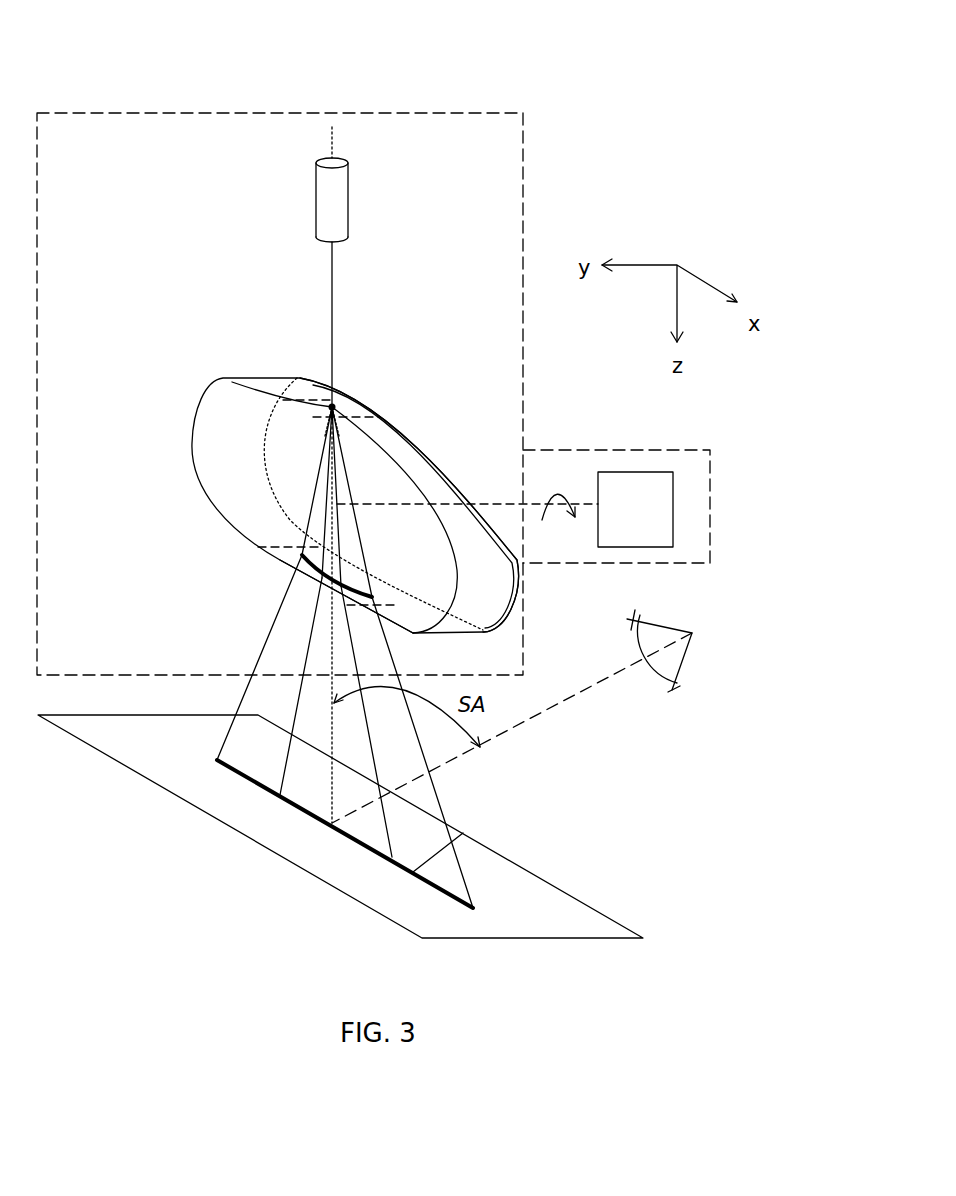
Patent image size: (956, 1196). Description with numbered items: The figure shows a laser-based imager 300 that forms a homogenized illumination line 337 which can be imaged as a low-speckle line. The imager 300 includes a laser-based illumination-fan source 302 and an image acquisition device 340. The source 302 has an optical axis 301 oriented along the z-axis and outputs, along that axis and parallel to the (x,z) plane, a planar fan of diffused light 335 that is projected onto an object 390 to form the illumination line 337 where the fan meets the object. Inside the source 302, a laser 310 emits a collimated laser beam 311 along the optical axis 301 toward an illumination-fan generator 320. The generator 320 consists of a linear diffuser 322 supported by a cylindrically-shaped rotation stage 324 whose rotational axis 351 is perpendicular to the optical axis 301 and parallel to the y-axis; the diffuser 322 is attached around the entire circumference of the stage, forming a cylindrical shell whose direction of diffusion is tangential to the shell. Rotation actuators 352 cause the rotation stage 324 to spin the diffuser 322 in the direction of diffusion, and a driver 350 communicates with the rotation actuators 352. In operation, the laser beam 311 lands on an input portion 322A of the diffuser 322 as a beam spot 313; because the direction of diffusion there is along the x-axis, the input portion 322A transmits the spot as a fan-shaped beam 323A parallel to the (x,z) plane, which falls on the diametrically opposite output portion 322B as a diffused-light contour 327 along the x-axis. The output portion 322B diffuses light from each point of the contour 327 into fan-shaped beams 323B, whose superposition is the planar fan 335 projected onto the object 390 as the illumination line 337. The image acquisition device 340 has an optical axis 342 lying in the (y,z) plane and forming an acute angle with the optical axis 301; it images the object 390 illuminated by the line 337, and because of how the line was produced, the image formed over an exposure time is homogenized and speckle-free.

The laser-based imager 300 is at (185, 88).
The optical axis 301 is at (333, 143).
The laser-based illumination-fan source 302 is at (280, 394).
The laser 310 is at (350, 196).
The collimated laser beam 311 is at (332, 314).
The beam spot 313 is at (332, 407).
The illumination-fan generator 320 is at (315, 495).
The linear diffuser 322 is at (411, 448).
The input portion 322A is at (357, 407).
The output portion 322B is at (280, 560).
The fan-shaped beam 323A is at (305, 487).
The fan-shaped beams 323B is at (317, 695).
The cylindrically-shaped rotation stage 324 is at (456, 471).
The diffused-light contour 327 is at (337, 582).
The planar fan of diffused light 335 is at (230, 692).
The illumination line 337 is at (463, 833).
The image acquisition device 340 is at (660, 624).
The optical axis 342 is at (563, 705).
The driver 350 is at (635, 509).
The rotational axis 351 is at (522, 503).
The rotation actuators 352 is at (560, 491).
The object 390 is at (600, 927).